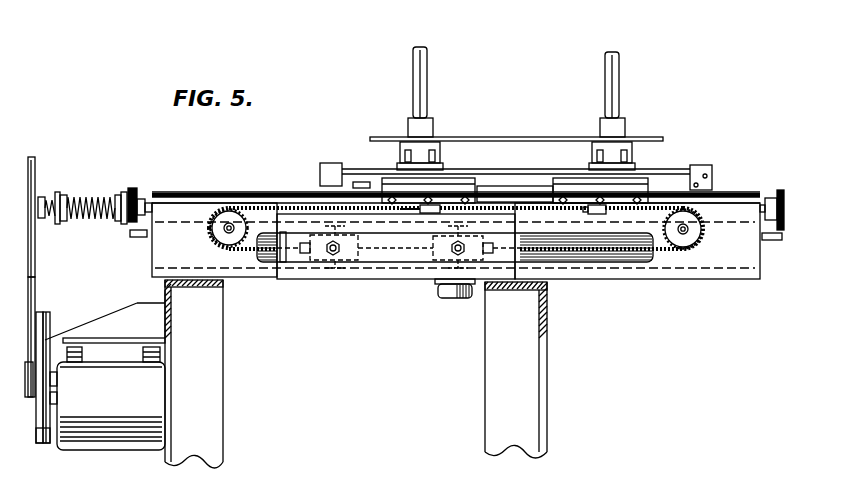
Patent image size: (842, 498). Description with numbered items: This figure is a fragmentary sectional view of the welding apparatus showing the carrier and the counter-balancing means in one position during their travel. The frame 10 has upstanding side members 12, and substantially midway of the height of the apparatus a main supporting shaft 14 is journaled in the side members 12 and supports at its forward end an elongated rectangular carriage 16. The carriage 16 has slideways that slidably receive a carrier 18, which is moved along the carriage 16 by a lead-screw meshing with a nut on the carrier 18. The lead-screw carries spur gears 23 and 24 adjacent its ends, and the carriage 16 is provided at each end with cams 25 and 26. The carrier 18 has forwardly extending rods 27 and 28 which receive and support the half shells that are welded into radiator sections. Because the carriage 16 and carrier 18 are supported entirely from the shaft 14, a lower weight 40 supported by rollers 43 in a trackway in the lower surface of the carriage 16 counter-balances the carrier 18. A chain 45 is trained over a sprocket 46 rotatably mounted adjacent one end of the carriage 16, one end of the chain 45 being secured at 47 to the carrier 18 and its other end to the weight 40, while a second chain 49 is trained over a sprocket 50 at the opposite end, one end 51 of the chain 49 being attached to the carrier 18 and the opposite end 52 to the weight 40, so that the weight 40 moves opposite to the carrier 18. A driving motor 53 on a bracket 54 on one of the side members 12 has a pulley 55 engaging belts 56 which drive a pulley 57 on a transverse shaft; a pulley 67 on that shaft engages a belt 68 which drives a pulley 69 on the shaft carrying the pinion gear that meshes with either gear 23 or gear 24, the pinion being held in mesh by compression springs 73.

The frame 10 is at (176, 320).
The upstanding side members 12 is at (548, 321).
The main supporting shaft 14 is at (458, 293).
The carriage 16 is at (745, 286).
The carrier 18 is at (660, 172).
The spur gear 23 is at (133, 187).
The spur gear 24 is at (779, 190).
The cam 25 is at (130, 236).
The cam 26 is at (783, 241).
The rod 27 is at (428, 93).
The rod 28 is at (620, 95).
The lower weight 40 is at (382, 280).
The rollers 43 is at (452, 267).
The chain 45 is at (655, 251).
The sprocket 46 is at (692, 239).
The chain securing point 47 is at (597, 215).
The second chain 49 is at (256, 246).
The sprocket 50 is at (222, 231).
The chain end 51 is at (415, 213).
The chain end 52 is at (290, 252).
The driving motor 53 is at (98, 444).
The bracket 54 is at (160, 283).
The pulley 55 is at (38, 429).
The belts 56 is at (47, 340).
The pulley 57 is at (43, 317).
The pulley 67 is at (32, 397).
The belt 68 is at (36, 279).
The pulley 69 is at (36, 178).
The compression springs 73 is at (88, 192).